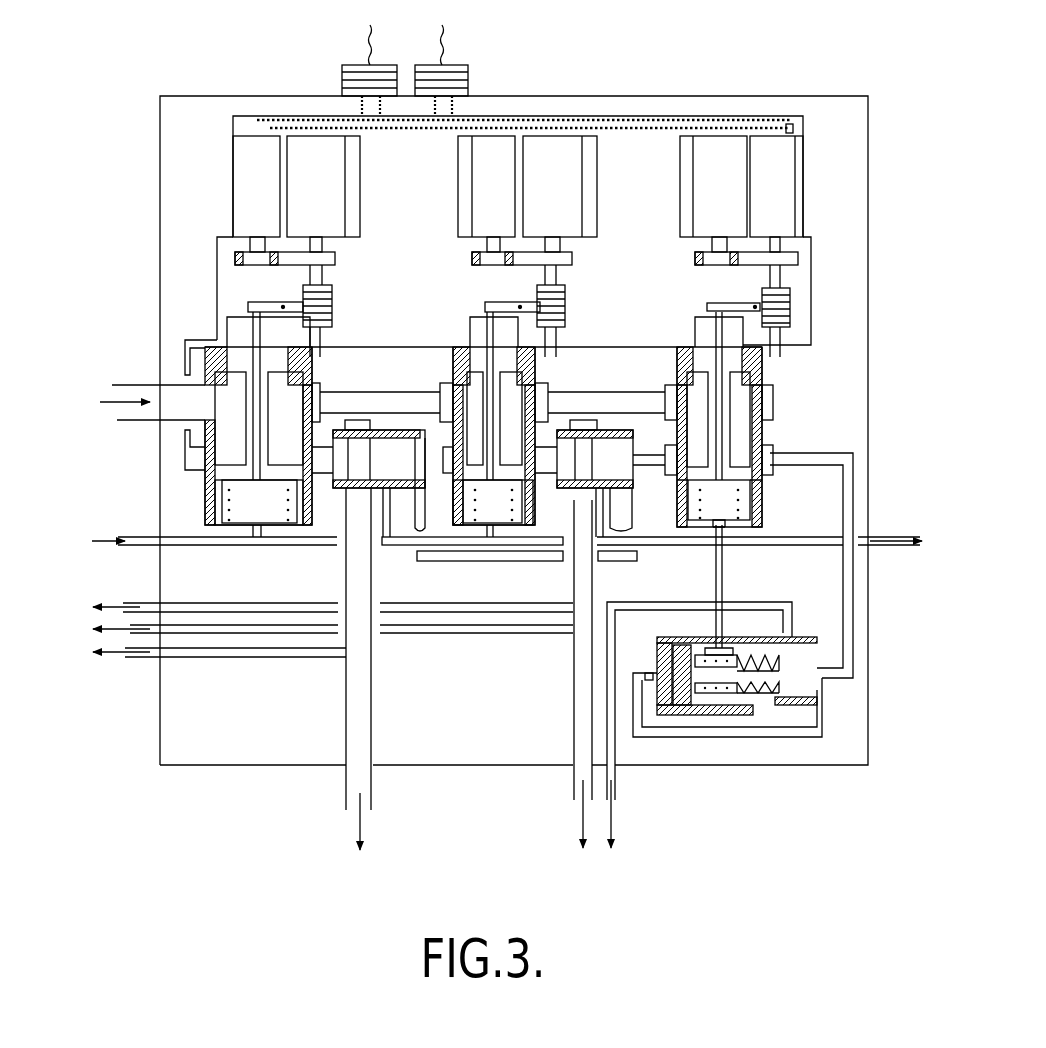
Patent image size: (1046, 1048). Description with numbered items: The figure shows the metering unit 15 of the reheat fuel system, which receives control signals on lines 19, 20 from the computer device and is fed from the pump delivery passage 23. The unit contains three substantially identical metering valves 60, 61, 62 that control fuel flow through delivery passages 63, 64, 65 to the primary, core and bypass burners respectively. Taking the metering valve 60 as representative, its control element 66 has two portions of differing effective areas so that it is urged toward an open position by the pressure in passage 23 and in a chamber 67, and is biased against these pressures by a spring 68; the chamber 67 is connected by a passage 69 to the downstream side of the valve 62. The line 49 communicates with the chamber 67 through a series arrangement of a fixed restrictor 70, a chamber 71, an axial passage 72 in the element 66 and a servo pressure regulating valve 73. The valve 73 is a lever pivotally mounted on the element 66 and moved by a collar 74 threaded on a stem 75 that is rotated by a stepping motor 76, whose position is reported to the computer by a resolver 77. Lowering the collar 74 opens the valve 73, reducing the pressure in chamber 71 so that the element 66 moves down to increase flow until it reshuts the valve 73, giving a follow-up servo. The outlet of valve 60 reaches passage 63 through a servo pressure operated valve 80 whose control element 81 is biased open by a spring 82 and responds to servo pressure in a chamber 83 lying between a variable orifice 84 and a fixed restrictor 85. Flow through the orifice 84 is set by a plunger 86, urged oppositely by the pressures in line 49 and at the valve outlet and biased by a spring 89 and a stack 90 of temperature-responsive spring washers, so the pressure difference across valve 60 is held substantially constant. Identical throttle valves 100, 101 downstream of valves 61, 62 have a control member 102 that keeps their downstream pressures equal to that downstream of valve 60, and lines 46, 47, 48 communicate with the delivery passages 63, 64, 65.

The metering unit 15 is at (232, 748).
The signal line 19 is at (370, 35).
The signal line 20 is at (450, 33).
The passage 23 is at (122, 393).
The line 46 is at (183, 607).
The line 47 is at (177, 632).
The line 48 is at (245, 652).
The line 49 is at (146, 540).
The metering valve 60 is at (768, 377).
The metering valve 61 is at (553, 380).
The metering valve 62 is at (200, 332).
The delivery passage 63 is at (612, 720).
The delivery passage 64 is at (578, 770).
The delivery passage 65 is at (346, 797).
The control element 66 is at (742, 475).
The chamber 67 is at (624, 233).
The spring 68 is at (742, 512).
The passage 69 is at (183, 440).
The fixed restrictor 70 is at (714, 530).
The chamber 71 is at (725, 515).
The axial passage 72 is at (722, 432).
The servo pressure regulating valve 73 is at (718, 308).
The collar 74 is at (790, 300).
The stem 75 is at (775, 278).
The stepping motor 76 is at (778, 160).
The resolver 77 is at (712, 160).
The servo pressure operated valve 80 is at (752, 710).
The control element 81 is at (797, 637).
The spring 82 is at (733, 700).
The chamber 83 is at (665, 695).
The variable orifice 84 is at (697, 648).
The fixed restrictor 85 is at (649, 672).
The plunger 86 is at (715, 690).
The spring 89 is at (725, 660).
The stack of temperature-responsive spring washers 90 is at (765, 700).
The throttle valve 100 is at (570, 502).
The throttle valve 101 is at (394, 502).
The control member 102 is at (600, 435).